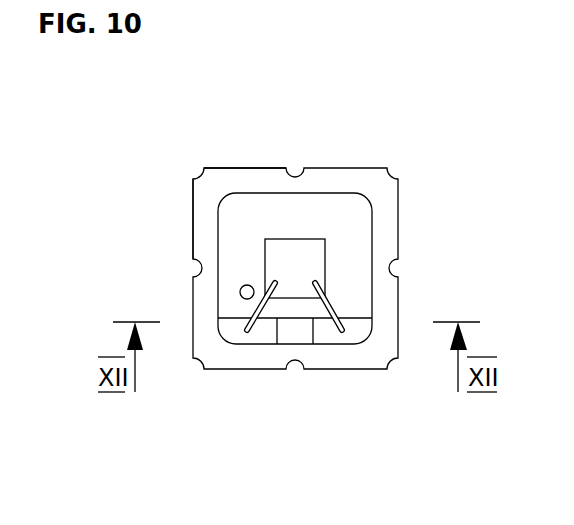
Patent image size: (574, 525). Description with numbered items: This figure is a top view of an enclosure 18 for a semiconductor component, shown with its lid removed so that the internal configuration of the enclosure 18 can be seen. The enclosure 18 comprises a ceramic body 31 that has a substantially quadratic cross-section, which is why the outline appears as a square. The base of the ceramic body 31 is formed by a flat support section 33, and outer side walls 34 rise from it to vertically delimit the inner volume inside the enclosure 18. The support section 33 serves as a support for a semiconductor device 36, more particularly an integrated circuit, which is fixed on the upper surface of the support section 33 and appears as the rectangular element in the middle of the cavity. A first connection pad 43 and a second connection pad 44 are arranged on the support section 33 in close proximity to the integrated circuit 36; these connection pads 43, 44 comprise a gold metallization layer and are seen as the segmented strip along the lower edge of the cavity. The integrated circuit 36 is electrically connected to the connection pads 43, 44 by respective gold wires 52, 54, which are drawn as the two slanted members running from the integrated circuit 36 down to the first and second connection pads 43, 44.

The enclosure 18 is at (424, 174).
The ceramic body 31 is at (189, 212).
The support section 33 is at (236, 237).
The outer side walls 34 is at (227, 178).
The semiconductor device 36 is at (383, 266).
The first connection pad 43 is at (353, 333).
The second connection pad 44 is at (240, 333).
The gold wire 52 is at (407, 298).
The gold wire 54 is at (253, 311).